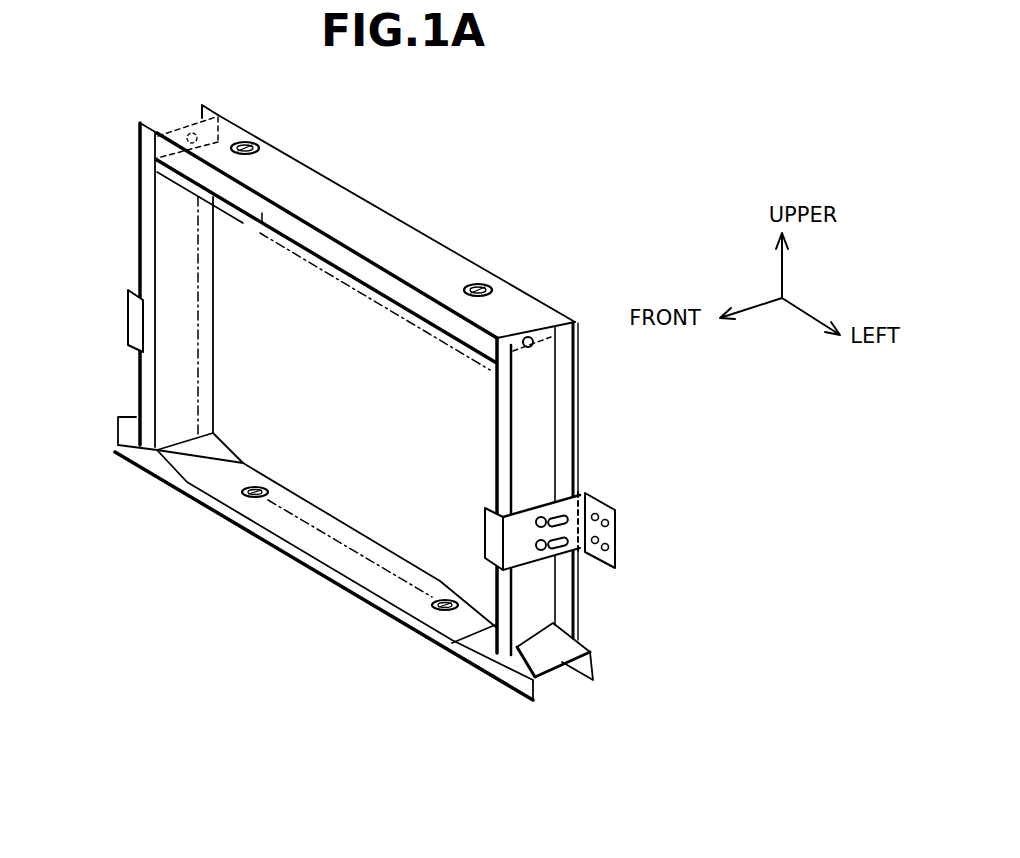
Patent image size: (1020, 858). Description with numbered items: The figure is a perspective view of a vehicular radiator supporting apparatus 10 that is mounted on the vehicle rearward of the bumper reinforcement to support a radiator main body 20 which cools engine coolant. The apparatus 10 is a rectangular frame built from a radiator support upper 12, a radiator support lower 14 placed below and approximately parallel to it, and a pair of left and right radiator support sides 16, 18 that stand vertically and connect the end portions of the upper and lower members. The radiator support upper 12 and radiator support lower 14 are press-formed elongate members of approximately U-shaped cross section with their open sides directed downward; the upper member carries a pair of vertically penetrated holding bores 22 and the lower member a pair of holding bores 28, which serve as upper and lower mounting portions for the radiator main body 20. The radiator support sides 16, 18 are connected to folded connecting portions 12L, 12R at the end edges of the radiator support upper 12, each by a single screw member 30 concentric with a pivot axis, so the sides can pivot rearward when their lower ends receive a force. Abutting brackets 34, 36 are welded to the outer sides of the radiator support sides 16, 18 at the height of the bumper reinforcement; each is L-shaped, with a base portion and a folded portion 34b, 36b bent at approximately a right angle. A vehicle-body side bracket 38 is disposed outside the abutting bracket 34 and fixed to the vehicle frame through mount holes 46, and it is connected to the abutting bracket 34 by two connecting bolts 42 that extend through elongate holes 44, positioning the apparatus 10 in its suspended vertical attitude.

The vehicular radiator supporting apparatus 10 is at (369, 375).
The radiator support upper 12 is at (375, 216).
The right connecting portion 12R is at (180, 137).
The left connecting portion 12L is at (570, 326).
The radiator support lower 14 is at (324, 558).
The radiator support side 16 is at (566, 460).
The radiator support side 18 is at (136, 286).
The radiator main body 20 is at (262, 223).
The holding bores 22 is at (247, 146).
The holding bores 28 is at (248, 495).
The screw member 30 is at (528, 337).
The abutting bracket 34 is at (530, 517).
The folded portion 34b is at (492, 548).
The abutting bracket 36 is at (101, 285).
The folded portion 36b is at (135, 325).
The vehicle-body side bracket 38 is at (578, 485).
The connecting bolts 42 is at (544, 551).
The elongate holes 44 is at (539, 516).
The mount holes 46 is at (609, 523).